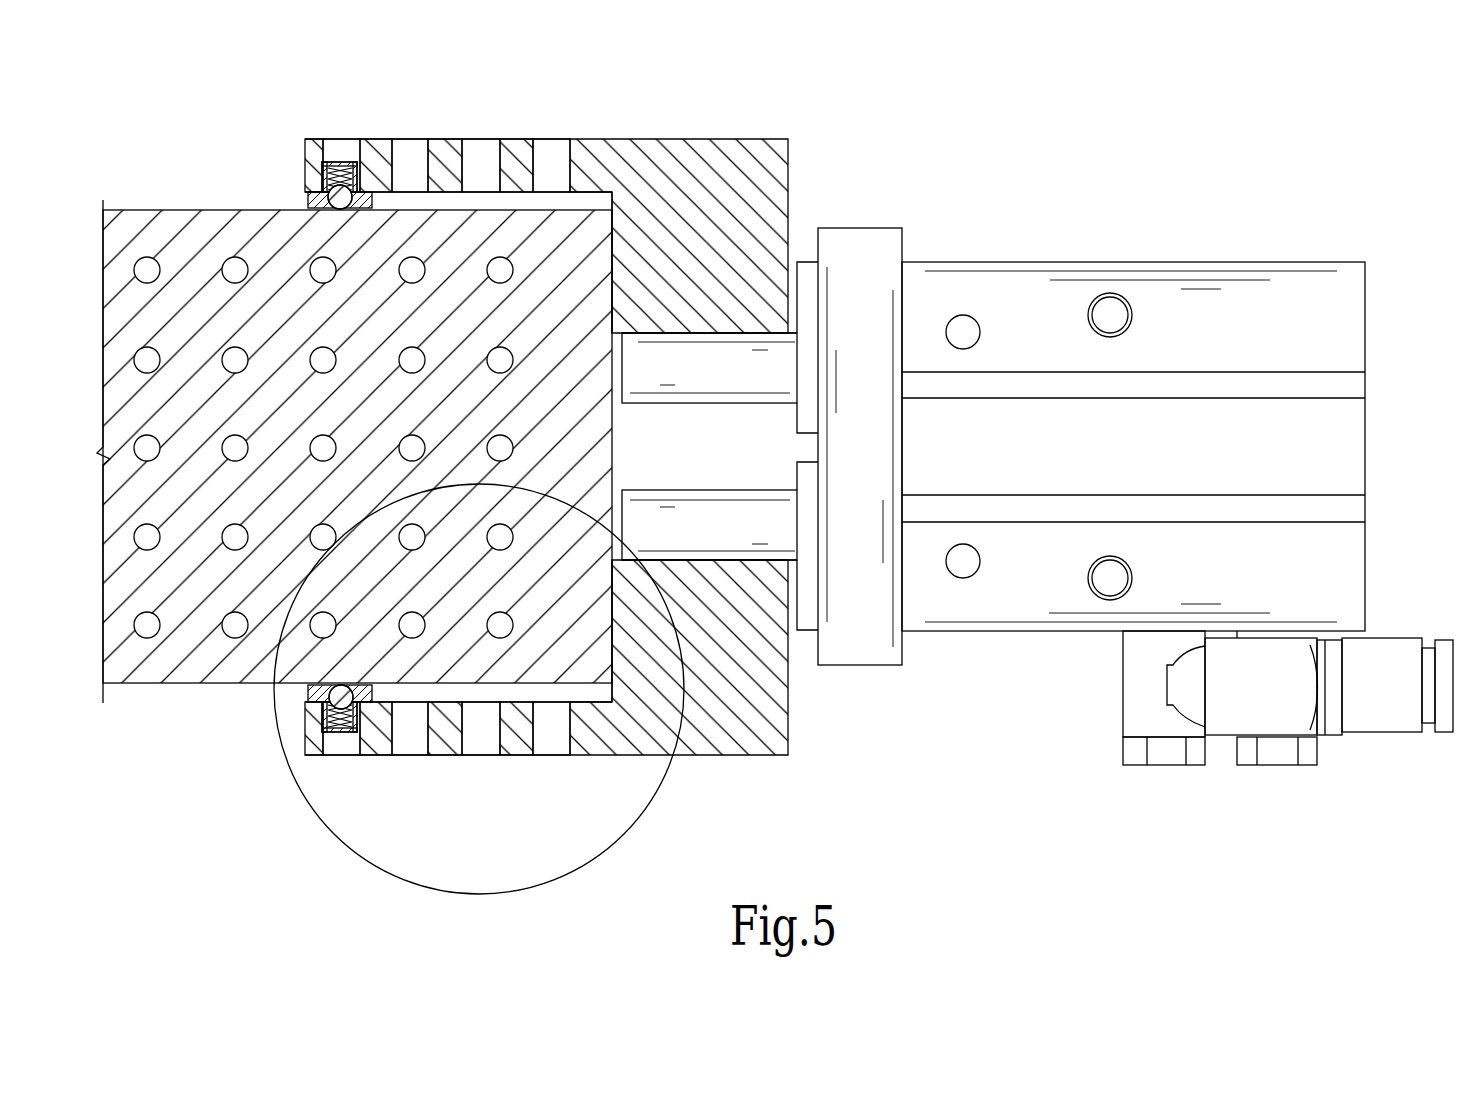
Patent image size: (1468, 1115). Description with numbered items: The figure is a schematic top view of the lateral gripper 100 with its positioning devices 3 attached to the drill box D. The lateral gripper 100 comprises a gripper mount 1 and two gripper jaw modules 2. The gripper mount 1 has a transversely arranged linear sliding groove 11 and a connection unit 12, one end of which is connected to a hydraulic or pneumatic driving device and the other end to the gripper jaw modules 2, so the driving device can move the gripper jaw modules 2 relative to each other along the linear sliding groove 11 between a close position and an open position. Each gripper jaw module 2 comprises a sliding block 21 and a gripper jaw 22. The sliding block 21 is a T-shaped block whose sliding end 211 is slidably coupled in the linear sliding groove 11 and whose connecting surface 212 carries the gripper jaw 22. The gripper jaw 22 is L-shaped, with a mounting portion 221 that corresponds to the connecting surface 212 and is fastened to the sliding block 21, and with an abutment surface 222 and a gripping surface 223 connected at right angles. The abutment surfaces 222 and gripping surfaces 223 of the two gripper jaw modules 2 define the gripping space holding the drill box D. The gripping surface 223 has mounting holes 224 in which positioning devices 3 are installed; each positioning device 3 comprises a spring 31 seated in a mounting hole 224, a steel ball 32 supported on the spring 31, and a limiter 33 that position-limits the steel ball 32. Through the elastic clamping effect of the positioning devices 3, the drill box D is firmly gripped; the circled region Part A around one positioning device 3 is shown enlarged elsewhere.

The lateral gripper 100 is at (1118, 210).
The gripper mount 1 is at (1260, 257).
The linear sliding groove 11 is at (818, 447).
The connection unit 12 is at (1368, 707).
The gripper jaw module 2 is at (820, 210).
The sliding block 21 is at (818, 459).
The sliding end 211 is at (803, 293).
The connecting surface 212 is at (818, 459).
The gripper jaw 22 is at (581, 450).
The mounting portion 221 is at (717, 333).
The abutment surface 222 is at (613, 278).
The gripping surface 223 is at (522, 190).
The mounting hole 224 is at (350, 147).
The positioning device 3 is at (277, 418).
The spring 31 is at (337, 162).
The steel ball 32 is at (305, 185).
The limiter 33 is at (303, 197).
The drill box D is at (150, 673).
The Part A is at (293, 797).